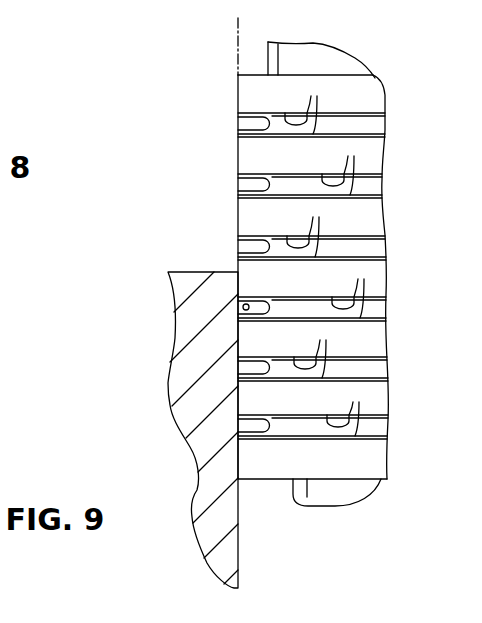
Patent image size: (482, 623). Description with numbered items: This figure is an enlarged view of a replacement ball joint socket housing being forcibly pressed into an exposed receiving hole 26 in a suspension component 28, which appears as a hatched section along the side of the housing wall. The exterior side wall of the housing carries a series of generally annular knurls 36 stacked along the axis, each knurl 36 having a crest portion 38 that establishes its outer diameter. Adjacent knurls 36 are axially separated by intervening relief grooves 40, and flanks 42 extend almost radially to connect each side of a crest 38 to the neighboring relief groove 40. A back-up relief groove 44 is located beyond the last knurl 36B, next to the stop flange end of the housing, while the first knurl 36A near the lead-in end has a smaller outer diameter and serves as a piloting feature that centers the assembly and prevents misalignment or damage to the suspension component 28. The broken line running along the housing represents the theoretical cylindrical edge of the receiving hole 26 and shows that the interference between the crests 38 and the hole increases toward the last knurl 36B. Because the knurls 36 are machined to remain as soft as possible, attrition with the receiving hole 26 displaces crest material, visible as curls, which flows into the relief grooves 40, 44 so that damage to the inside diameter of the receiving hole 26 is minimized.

The receiving hole 26 is at (242, 556).
The suspension component 28 is at (168, 308).
The knurl 36 is at (240, 128).
The first knurl 36A is at (190, 497).
The last knurl 36B is at (237, 78).
The crest portion 38 is at (375, 93).
The relief groove 40 is at (250, 119).
The flank 42 is at (329, 256).
The back-up relief groove 44 is at (327, 50).